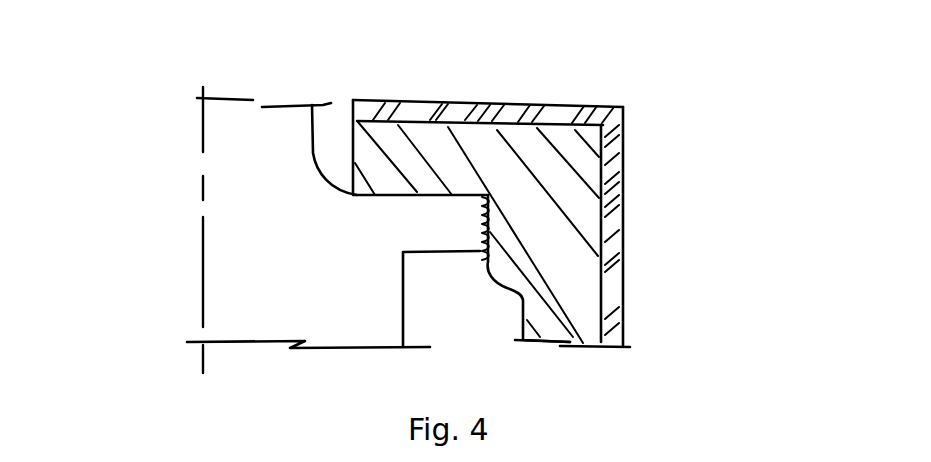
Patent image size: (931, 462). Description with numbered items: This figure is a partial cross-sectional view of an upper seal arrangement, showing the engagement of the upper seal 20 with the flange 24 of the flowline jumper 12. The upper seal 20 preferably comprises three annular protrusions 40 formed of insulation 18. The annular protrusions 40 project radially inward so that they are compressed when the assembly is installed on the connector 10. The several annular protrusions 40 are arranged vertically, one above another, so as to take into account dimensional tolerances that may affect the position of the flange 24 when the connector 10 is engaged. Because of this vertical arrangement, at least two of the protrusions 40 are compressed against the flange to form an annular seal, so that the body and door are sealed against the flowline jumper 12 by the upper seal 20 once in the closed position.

The connector 10 is at (272, 262).
The flowline jumper 12 is at (235, 155).
The insulation 18 is at (557, 293).
The upper seal 20 is at (502, 220).
The flange 24 is at (446, 214).
The annular protrusions 40 is at (485, 217).